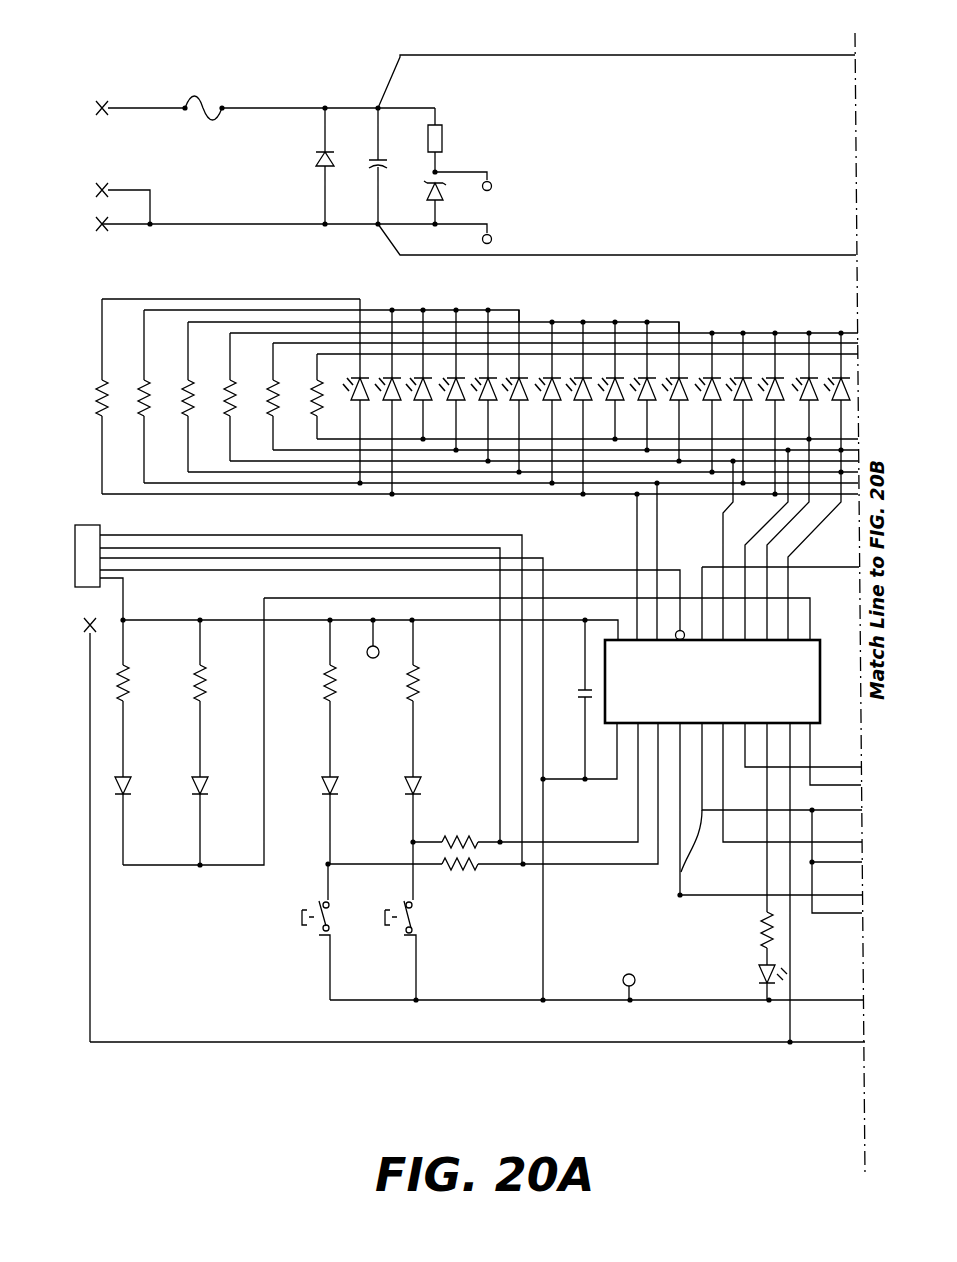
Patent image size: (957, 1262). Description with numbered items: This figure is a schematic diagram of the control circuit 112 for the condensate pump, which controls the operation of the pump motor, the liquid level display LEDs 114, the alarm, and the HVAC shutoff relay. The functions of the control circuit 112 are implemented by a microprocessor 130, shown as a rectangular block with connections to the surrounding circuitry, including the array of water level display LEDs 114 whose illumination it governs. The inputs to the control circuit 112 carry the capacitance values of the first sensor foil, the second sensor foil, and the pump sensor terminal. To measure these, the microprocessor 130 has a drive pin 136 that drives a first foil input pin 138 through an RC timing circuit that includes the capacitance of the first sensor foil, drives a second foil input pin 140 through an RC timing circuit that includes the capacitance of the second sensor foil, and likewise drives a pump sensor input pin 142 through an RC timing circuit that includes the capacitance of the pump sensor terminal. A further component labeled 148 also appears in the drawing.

The control circuit 112 is at (457, 31).
The water level display LEDs 114 is at (601, 303).
The microprocessor 130 is at (824, 654).
The drive pin 136 is at (681, 870).
The first foil input pin 138 is at (722, 845).
The second foil input pin 140 is at (680, 895).
The pump sensor input pin 142 is at (846, 728).
The diode 148 is at (133, 787).